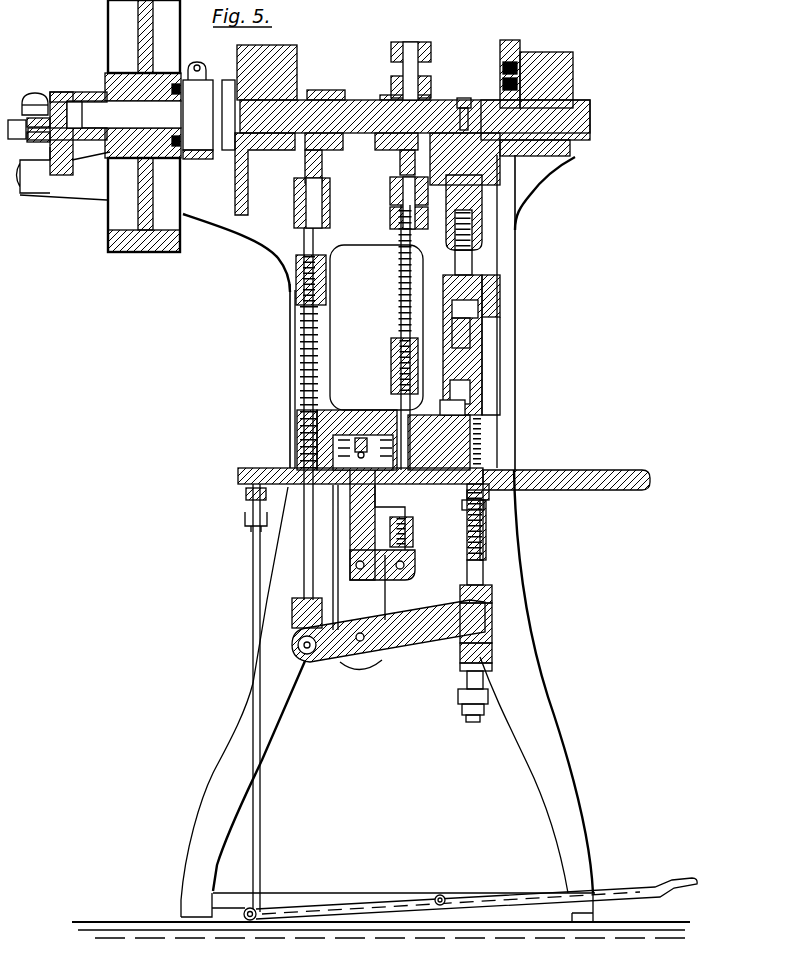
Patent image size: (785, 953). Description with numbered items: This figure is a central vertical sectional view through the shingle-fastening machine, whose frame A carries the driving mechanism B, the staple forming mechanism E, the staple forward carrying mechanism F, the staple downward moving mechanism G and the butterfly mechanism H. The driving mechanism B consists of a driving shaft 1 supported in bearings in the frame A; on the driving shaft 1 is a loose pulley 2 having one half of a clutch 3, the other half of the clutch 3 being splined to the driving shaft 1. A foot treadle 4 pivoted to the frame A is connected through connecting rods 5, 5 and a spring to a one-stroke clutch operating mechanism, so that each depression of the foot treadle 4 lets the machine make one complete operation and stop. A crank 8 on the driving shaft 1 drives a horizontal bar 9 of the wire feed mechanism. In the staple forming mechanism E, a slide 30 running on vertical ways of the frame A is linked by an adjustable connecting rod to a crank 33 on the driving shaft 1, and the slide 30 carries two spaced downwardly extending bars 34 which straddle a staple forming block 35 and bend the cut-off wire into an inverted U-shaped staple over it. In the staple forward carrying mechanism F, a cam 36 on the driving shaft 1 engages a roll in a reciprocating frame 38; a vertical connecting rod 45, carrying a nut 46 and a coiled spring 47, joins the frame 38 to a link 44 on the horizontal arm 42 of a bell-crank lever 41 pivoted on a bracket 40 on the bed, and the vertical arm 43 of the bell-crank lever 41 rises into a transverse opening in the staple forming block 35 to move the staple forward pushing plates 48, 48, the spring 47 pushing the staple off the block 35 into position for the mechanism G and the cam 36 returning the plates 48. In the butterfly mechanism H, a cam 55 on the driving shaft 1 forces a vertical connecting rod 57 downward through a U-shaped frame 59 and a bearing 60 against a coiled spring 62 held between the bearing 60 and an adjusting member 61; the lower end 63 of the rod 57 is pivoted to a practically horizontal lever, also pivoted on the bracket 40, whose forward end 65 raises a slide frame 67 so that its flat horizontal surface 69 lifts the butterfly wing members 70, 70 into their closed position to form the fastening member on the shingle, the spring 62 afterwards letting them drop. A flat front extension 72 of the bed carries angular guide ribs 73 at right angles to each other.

The driving shaft 1 is at (356, 104).
The loose pulley 2 is at (145, 252).
The clutch 3 is at (227, 148).
The foot treadle 4 is at (660, 888).
The connecting rods 5 is at (253, 661).
The crank 8 is at (68, 176).
The horizontal bar 9 is at (36, 96).
The slide 30 is at (472, 352).
The crank 33 is at (490, 165).
The downwardly extending bars 34 is at (445, 488).
The staple forming block 35 is at (480, 433).
The cam 36 is at (400, 163).
The frame 38 is at (432, 54).
The bracket 40 is at (352, 576).
The bell-crank lever 41 is at (357, 542).
The horizontal arm 42 is at (398, 576).
The vertical arm 43 is at (355, 456).
The link 44 is at (410, 540).
The vertical connecting rod 45 is at (399, 402).
The nut 46 is at (393, 363).
The coiled spring 47 is at (404, 290).
The staple forward pushing plate 48 is at (343, 440).
The cam 55 is at (313, 90).
The vertical connecting rod 57 is at (312, 336).
The U-shaped frame 59 is at (292, 224).
The bearing 60 is at (298, 424).
The adjusting member 61 is at (297, 293).
The coiled spring 62 is at (301, 361).
The lower end 63 is at (290, 630).
The forward end 65 is at (492, 622).
The slide frame 67 is at (492, 596).
The flat horizontal surface 69 is at (486, 497).
The butterfly wing members 70 is at (476, 496).
The flat front extension 72 is at (614, 491).
The angular guide ribs 73 is at (612, 470).
The frame A is at (270, 255).
The driving mechanism B is at (115, 18).
The staple forming mechanism E is at (482, 233).
The staple forward carrying mechanism F is at (412, 42).
The staple downward moving mechanism G is at (490, 357).
The butterfly mechanism H is at (297, 173).